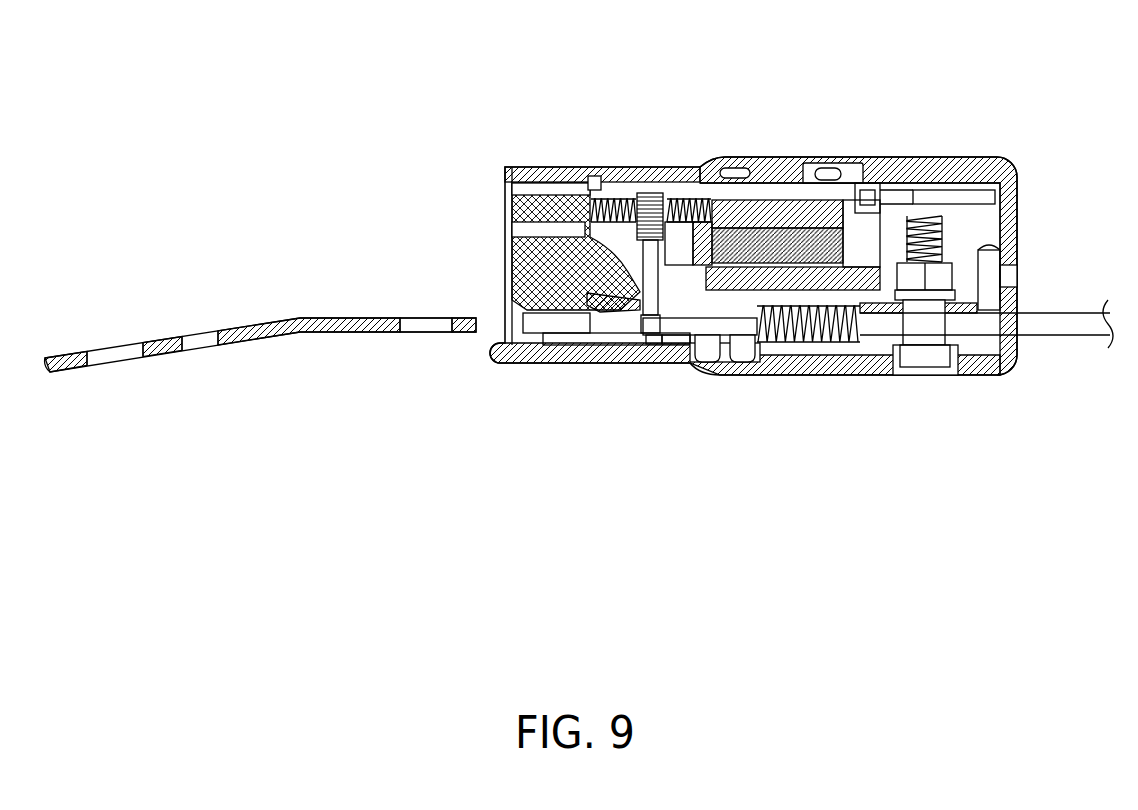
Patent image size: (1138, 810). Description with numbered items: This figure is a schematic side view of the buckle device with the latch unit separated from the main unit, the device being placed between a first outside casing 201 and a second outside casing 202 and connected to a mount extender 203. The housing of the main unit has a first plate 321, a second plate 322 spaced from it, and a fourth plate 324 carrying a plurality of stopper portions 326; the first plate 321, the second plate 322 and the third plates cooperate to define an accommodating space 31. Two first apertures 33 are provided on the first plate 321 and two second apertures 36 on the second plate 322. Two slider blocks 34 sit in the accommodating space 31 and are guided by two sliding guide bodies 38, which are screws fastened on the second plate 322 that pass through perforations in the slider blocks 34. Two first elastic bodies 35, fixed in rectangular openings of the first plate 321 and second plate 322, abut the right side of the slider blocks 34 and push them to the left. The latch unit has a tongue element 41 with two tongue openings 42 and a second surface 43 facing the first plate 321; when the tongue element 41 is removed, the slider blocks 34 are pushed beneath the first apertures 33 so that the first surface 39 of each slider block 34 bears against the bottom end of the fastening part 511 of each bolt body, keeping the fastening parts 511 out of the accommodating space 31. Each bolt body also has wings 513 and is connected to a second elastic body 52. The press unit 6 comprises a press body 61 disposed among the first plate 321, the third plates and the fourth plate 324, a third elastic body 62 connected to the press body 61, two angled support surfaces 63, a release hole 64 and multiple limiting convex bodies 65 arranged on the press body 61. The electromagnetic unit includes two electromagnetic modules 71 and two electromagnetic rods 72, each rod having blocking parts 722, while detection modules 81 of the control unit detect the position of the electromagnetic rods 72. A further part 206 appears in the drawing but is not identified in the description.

The press unit 6 is at (372, 172).
The accommodating space 31 is at (596, 333).
The first apertures 33 is at (600, 325).
The slider blocks 34 is at (730, 372).
The first elastic bodies 35 is at (845, 375).
The second apertures 36 is at (650, 335).
The sliding guide bodies 38 is at (702, 363).
The first surface 39 is at (662, 345).
The tongue element 41 is at (332, 318).
The tongue openings 42 is at (420, 318).
The second surface 43 is at (468, 318).
The second elastic bodies 52 is at (690, 198).
The press body 61 is at (512, 188).
The third elastic body 62 is at (610, 198).
The angled support surfaces 63 is at (590, 305).
The release hole 64 is at (512, 230).
The limiting convex bodies 65 is at (592, 178).
The electromagnetic modules 71 is at (845, 185).
The electromagnetic rods 72 is at (822, 200).
The detection modules 81 is at (880, 185).
The first outside casing 201 is at (960, 375).
The second outside casing 202 is at (980, 160).
The mount extender 203 is at (1068, 340).
The lower nut 206 is at (912, 375).
The first plate 321 is at (790, 372).
The second plate 322 is at (670, 345).
The fourth plate 324 is at (693, 170).
The stopper portions 326 is at (552, 167).
The fastening part 511 is at (638, 333).
The wings 513 is at (652, 193).
The blocking parts 722 is at (770, 200).